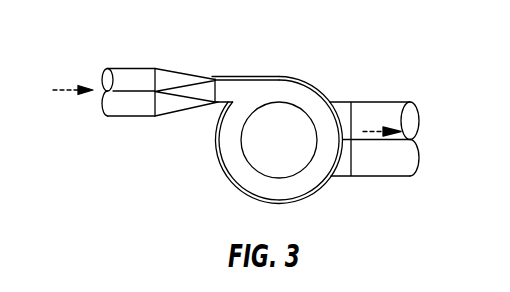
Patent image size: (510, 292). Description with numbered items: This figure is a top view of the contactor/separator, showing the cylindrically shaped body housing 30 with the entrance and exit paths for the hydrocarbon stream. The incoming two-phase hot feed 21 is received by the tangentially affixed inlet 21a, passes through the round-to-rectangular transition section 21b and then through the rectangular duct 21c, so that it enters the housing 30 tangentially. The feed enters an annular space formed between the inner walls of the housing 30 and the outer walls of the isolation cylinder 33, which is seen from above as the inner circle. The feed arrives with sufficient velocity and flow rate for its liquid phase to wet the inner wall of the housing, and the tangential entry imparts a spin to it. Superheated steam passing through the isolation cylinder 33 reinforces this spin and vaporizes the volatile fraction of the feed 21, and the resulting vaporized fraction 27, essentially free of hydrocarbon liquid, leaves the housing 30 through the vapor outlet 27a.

The incoming two-phase hot feed 21 is at (72, 88).
The tangentially affixed inlet 21a is at (128, 68).
The round-to-rectangular transition section 21b is at (188, 75).
The rectangular duct 21c is at (248, 77).
The body housing 30 is at (305, 78).
The isolation cylinder 33 is at (243, 158).
The vapor outlet 27a is at (355, 102).
The vaporized fraction 27 is at (381, 128).